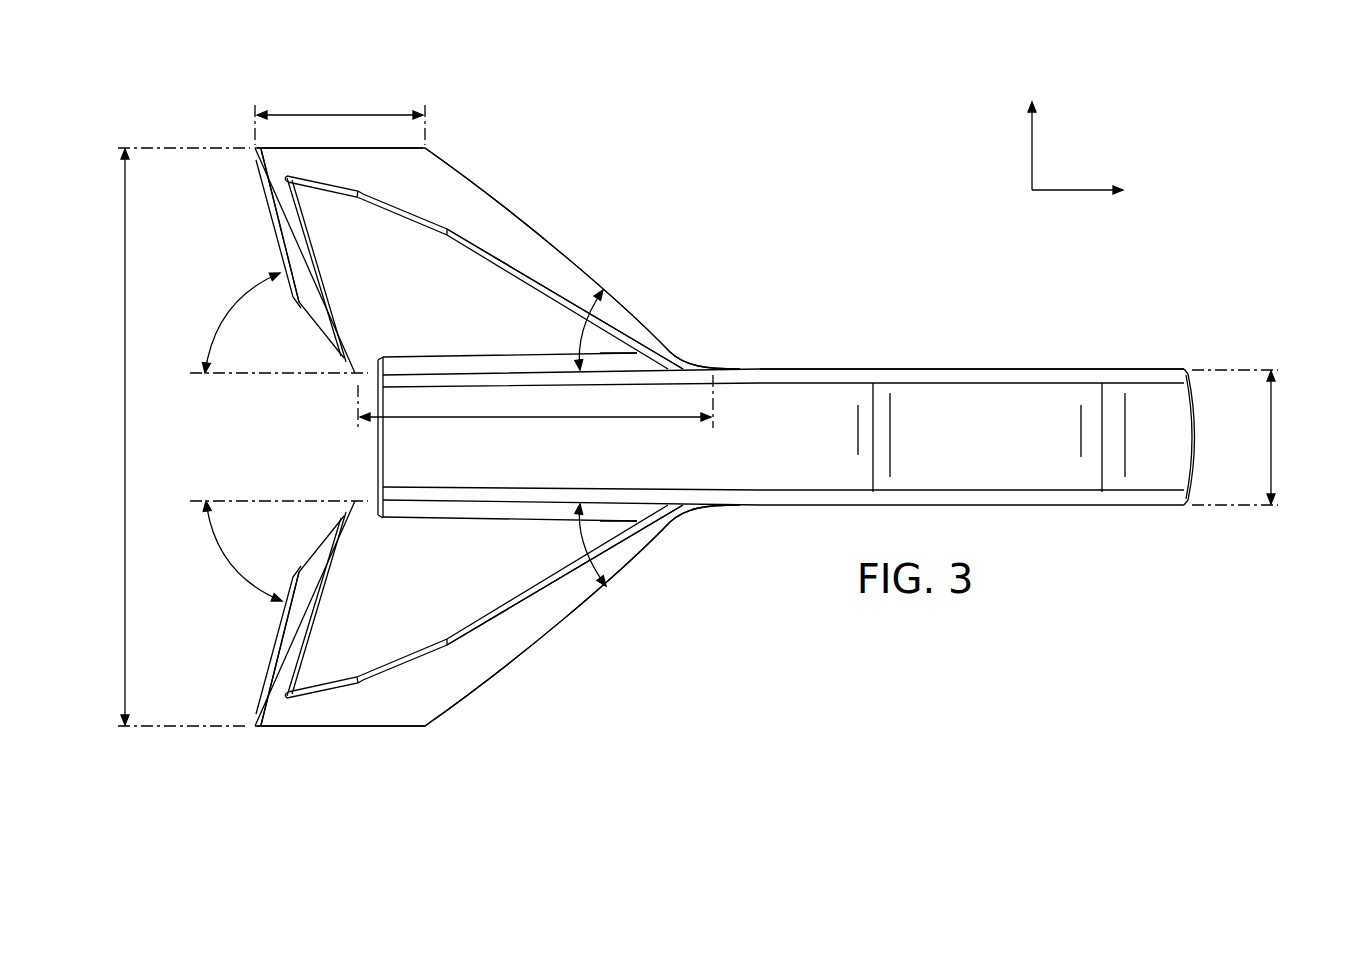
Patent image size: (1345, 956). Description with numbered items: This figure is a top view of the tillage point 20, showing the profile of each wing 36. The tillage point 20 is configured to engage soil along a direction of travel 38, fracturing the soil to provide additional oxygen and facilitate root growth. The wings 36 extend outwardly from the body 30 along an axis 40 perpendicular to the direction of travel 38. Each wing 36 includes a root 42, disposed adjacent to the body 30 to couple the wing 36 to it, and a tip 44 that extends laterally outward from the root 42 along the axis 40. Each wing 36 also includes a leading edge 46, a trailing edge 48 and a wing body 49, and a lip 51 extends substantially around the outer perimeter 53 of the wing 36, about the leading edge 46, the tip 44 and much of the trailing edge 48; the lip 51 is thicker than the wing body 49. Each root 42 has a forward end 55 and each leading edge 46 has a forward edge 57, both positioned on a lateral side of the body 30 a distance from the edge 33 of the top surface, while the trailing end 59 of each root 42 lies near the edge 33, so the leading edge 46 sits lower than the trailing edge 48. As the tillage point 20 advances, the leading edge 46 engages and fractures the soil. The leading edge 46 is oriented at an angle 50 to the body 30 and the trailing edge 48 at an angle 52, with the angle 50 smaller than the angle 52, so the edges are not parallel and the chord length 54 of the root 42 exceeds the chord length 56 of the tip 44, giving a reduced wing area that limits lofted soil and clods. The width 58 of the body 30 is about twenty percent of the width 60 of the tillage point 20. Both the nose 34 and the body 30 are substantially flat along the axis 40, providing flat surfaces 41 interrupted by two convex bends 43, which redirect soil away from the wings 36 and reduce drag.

The tillage point 20 is at (785, 305).
The body 30 is at (942, 390).
The edge of the top surface 33 is at (1060, 367).
The nose 34 is at (1167, 388).
The wing 36 is at (467, 190).
The direction of travel 38 is at (1073, 190).
The axis 40 is at (1032, 147).
The flat surface 41 is at (793, 403).
The root 42 is at (465, 373).
The convex bend 43 is at (890, 395).
The tip 44 is at (368, 147).
The leading edge 46 is at (547, 240).
The trailing edge 48 is at (272, 232).
The wing body 49 is at (432, 272).
The angle 50 is at (582, 338).
The lip 51 is at (428, 163).
The angle 52 is at (227, 305).
The outer perimeter 53 is at (532, 223).
The chord length 54 is at (533, 420).
The forward end 55 is at (632, 358).
The chord length 56 is at (342, 113).
The forward edge 57 is at (687, 357).
The width 58 is at (1272, 408).
The trailing end 59 is at (378, 361).
The width 60 is at (125, 440).